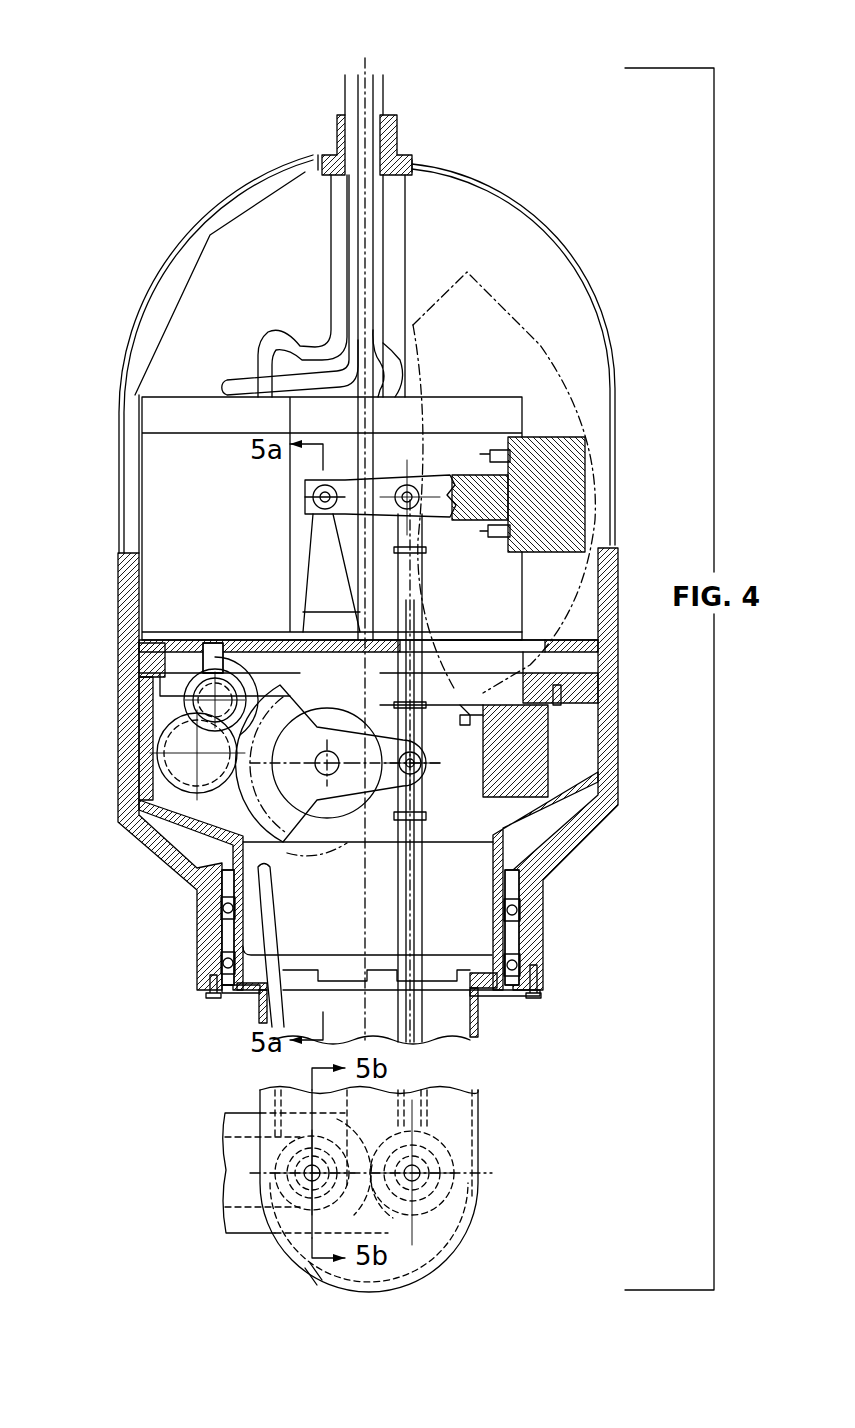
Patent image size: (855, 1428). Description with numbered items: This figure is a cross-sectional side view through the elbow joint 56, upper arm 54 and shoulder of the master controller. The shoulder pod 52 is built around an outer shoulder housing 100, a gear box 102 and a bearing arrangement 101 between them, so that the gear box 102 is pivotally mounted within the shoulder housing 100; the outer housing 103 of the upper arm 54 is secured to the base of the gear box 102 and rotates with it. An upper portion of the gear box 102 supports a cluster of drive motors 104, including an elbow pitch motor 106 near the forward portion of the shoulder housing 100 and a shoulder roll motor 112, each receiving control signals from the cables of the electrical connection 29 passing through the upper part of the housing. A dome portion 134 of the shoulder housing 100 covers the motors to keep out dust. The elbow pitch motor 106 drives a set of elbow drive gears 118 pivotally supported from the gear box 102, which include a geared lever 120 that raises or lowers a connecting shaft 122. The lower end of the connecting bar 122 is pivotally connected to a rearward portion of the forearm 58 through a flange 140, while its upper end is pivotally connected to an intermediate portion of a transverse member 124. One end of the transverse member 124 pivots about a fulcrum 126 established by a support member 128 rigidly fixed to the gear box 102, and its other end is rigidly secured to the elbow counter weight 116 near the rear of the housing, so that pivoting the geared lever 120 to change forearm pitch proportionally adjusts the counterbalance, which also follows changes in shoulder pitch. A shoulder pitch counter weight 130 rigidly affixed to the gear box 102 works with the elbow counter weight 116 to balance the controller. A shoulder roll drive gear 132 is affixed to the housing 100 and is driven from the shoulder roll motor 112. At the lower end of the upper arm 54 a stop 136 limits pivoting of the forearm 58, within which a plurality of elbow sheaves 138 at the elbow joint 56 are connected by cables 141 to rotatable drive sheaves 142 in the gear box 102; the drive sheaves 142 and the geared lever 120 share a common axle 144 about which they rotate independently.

The electrical connection 29 is at (366, 70).
The shoulder pod 52 is at (223, 179).
The dome portion 134 is at (500, 188).
The drive motors 104 is at (164, 395).
The transverse member 124 is at (423, 480).
The elbow counter weight 116 is at (568, 437).
The fulcrum 126 is at (317, 497).
The support member 128 is at (318, 568).
The elbow pitch motor 106 is at (210, 586).
The shoulder roll motor 112 is at (478, 580).
The shoulder housing 100 is at (620, 700).
The elbow drive gears 118 is at (160, 720).
The common axle 144 is at (322, 757).
The gear box 102 is at (135, 768).
The shoulder pitch counter weight 130 is at (550, 775).
The geared lever 120 is at (143, 802).
The shoulder roll drive gear 132 is at (195, 883).
The drive sheaves 142 is at (350, 813).
The connecting shaft 122 is at (410, 897).
The bearing arrangement 101 is at (207, 947).
The upper arm 54 is at (261, 1010).
The outer housing 103 is at (480, 1012).
The cables 141 is at (272, 1095).
The elbow sheaves 138 is at (288, 1165).
The elbow joint 56 is at (484, 1203).
The forearm 58 is at (243, 1235).
The flange 140 is at (385, 1218).
The stop 136 is at (312, 1272).